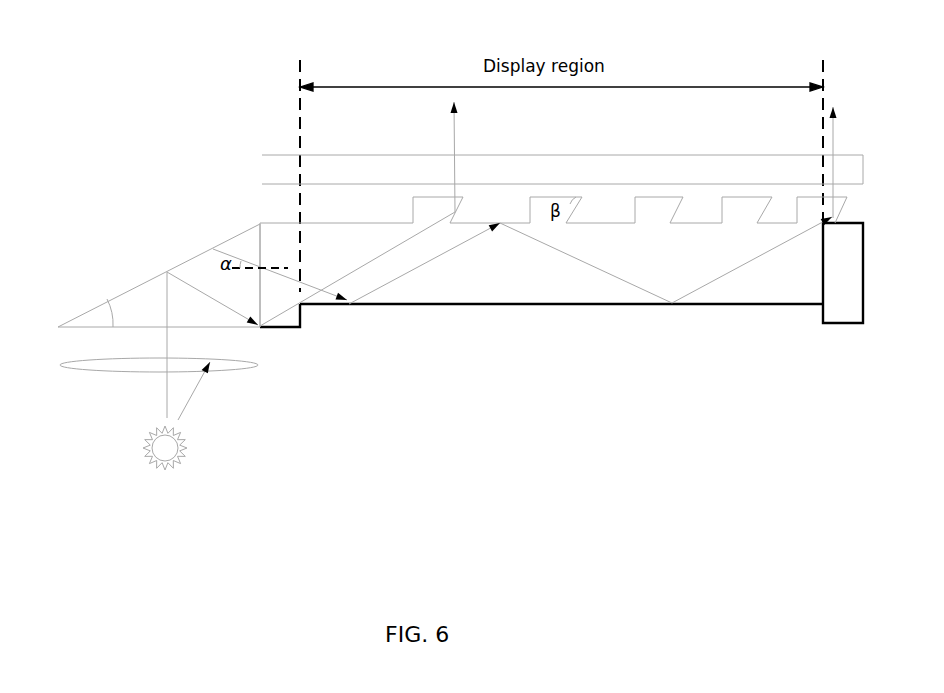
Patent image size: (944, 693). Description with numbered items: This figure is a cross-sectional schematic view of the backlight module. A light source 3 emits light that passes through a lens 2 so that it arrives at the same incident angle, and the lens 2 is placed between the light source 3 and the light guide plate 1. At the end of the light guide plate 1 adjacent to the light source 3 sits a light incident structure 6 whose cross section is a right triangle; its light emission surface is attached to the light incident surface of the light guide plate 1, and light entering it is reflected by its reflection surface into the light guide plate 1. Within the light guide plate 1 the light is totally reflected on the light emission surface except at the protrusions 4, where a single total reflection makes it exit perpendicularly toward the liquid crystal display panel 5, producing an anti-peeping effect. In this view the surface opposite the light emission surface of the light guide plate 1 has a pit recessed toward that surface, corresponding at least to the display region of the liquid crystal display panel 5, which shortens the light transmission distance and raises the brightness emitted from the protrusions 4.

The light guide plate 1 is at (510, 213).
The lens 2 is at (216, 413).
The light source 3 is at (230, 495).
The protrusions 4 is at (578, 158).
The liquid crystal display panel 5 is at (547, 139).
The light incident structure 6 is at (159, 212).